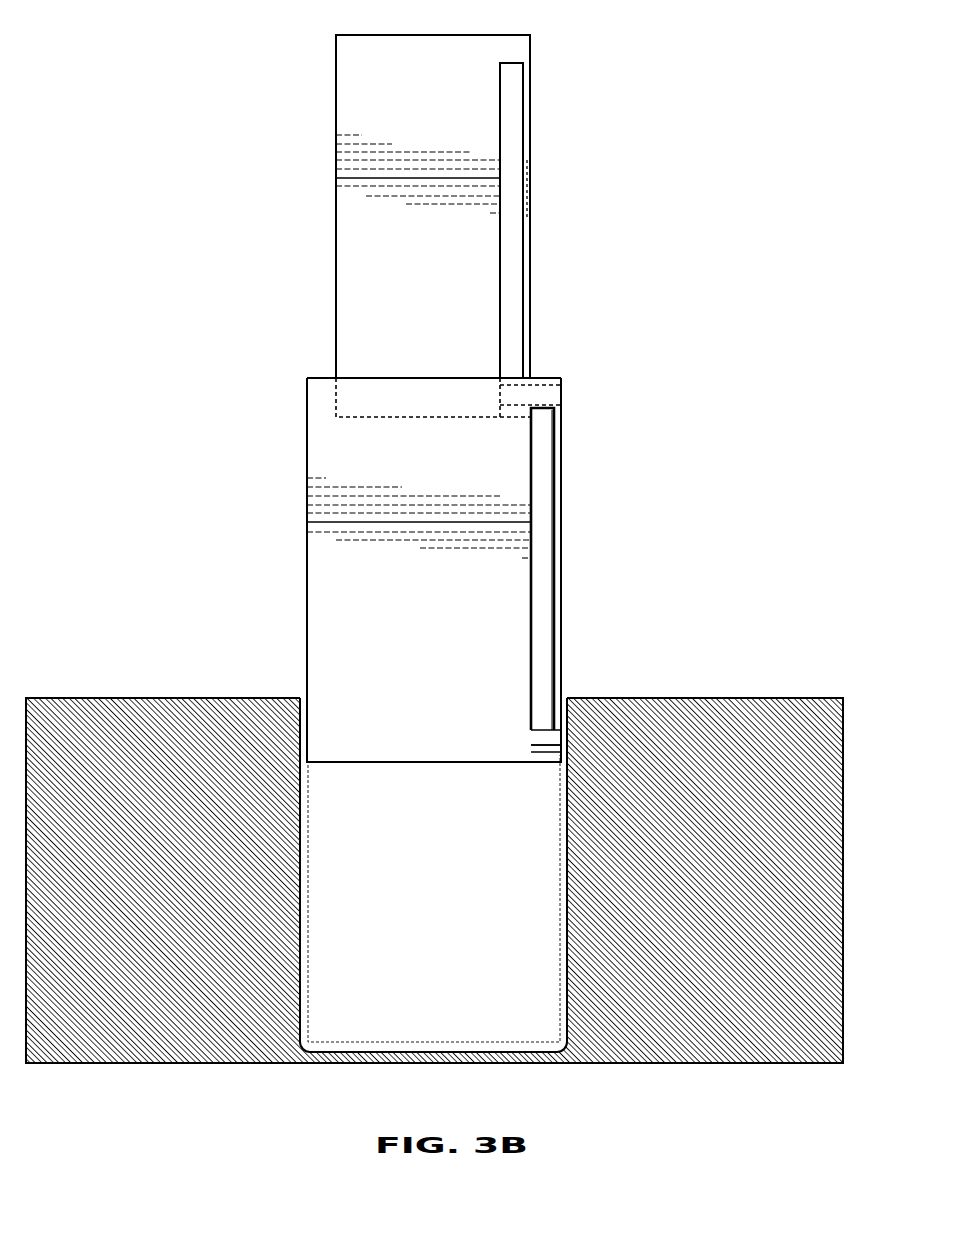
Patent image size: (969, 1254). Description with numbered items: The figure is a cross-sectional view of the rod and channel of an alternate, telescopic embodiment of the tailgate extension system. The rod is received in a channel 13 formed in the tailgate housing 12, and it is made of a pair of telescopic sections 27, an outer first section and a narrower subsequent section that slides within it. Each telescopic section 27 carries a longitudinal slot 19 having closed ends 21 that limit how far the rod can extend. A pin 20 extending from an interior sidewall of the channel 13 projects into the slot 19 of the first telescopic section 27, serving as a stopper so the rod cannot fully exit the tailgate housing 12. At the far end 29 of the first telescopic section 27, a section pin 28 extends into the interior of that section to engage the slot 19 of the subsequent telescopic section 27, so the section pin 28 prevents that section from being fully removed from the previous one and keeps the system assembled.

The tailgate housing 12 is at (822, 778).
The channel 13 is at (525, 1025).
The slot 19 is at (510, 118).
The pin 20 is at (540, 738).
The closed end 21 is at (542, 410).
The telescopic section 27 is at (348, 120).
The section pin 28 is at (540, 380).
The far end 29 is at (315, 378).